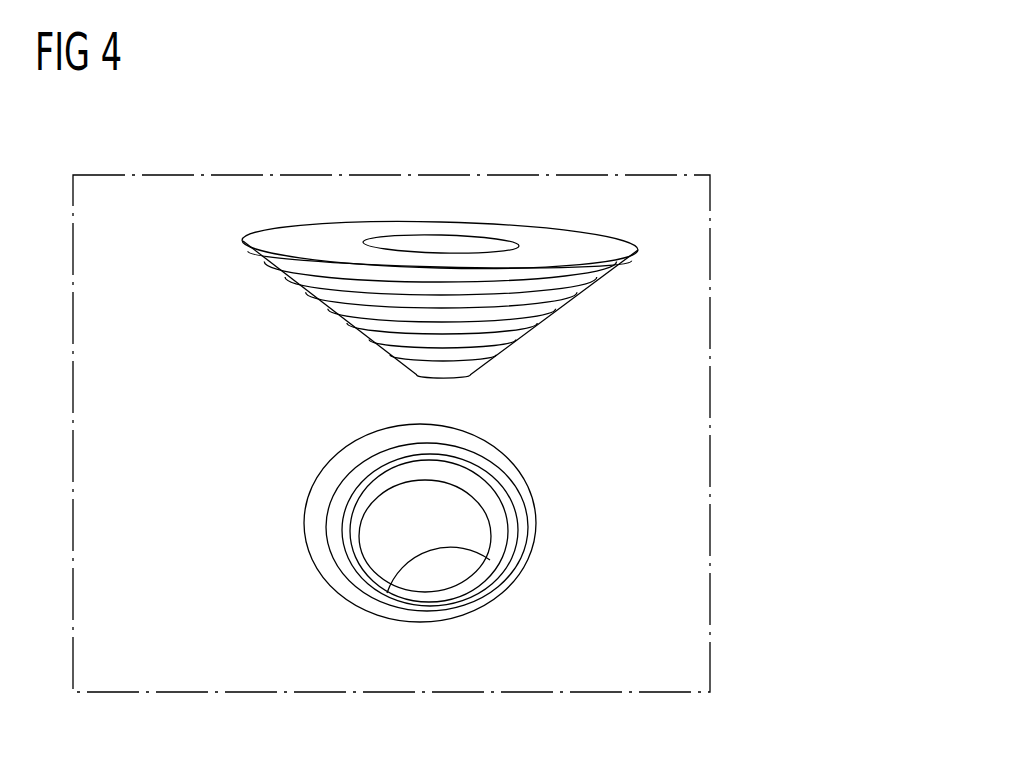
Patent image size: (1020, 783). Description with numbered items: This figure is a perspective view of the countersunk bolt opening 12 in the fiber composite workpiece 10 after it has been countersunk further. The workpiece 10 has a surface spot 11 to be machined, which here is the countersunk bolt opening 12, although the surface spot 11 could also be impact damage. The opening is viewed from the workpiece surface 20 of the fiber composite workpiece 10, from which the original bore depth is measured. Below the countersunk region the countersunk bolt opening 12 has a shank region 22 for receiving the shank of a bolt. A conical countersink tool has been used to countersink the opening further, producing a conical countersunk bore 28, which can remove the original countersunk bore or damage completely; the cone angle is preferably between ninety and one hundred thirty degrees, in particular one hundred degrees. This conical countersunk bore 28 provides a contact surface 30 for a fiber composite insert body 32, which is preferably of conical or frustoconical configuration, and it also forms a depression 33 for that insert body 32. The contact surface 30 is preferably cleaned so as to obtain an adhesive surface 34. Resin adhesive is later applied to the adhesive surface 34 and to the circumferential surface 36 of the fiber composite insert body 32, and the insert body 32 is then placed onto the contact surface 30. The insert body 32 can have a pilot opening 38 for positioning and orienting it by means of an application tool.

The fiber composite workpiece 10 is at (251, 137).
The surface spot 11 is at (230, 377).
The countersunk bolt opening 12 is at (445, 578).
The workpiece surface 20 is at (100, 583).
The shank region 22 is at (445, 502).
The conical countersunk bore 28 is at (324, 572).
The contact surface 30 is at (502, 548).
The fiber composite insert body 32 is at (439, 257).
The depression 33 is at (517, 492).
The adhesive surface 34 is at (338, 483).
The circumferential surface 36 is at (546, 322).
The pilot opening 38 is at (450, 248).